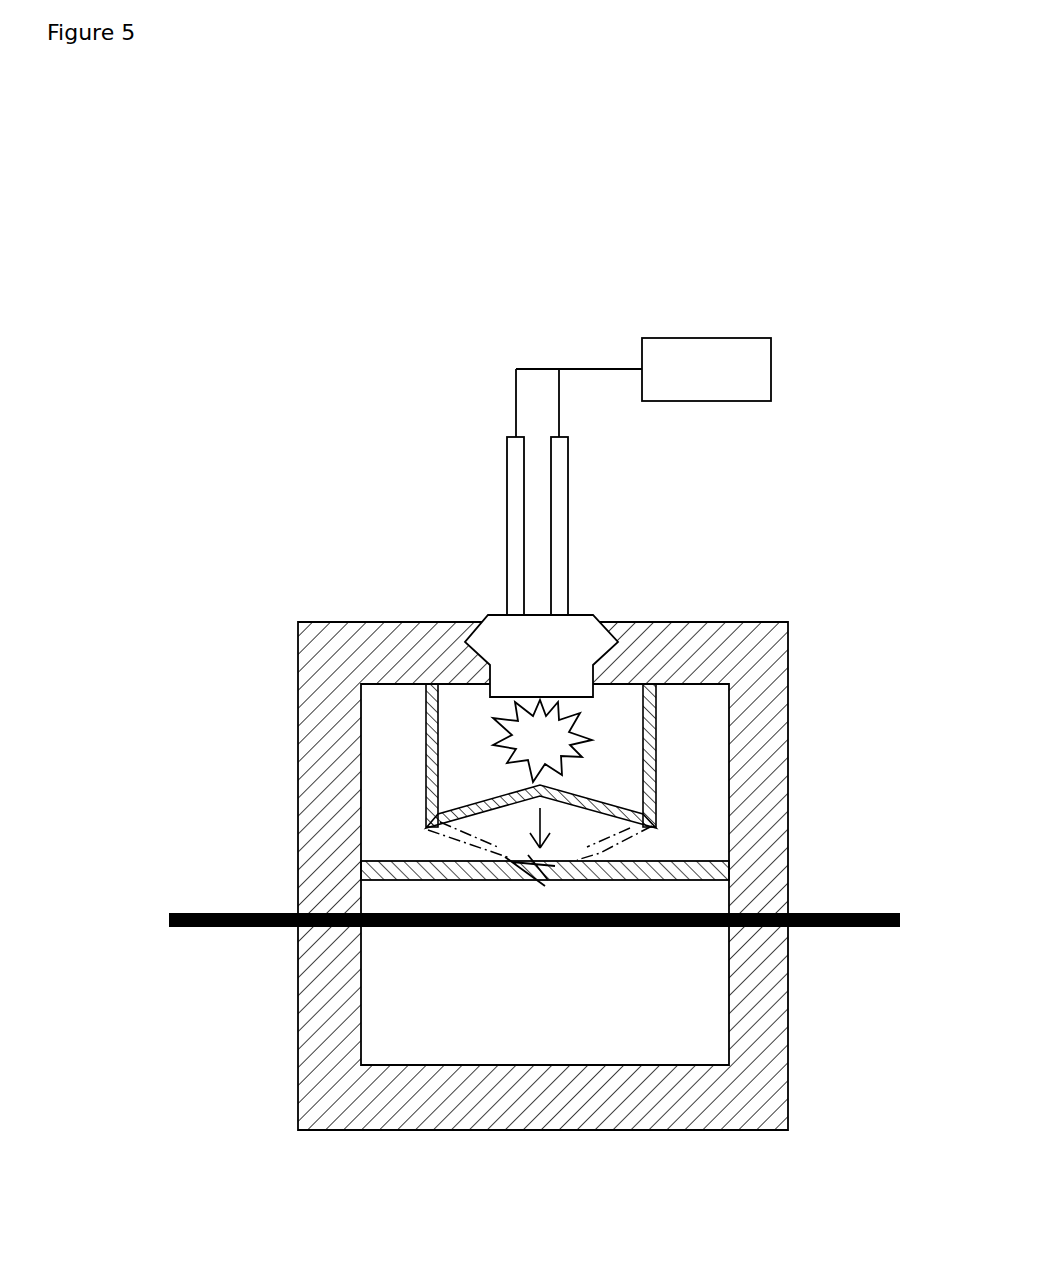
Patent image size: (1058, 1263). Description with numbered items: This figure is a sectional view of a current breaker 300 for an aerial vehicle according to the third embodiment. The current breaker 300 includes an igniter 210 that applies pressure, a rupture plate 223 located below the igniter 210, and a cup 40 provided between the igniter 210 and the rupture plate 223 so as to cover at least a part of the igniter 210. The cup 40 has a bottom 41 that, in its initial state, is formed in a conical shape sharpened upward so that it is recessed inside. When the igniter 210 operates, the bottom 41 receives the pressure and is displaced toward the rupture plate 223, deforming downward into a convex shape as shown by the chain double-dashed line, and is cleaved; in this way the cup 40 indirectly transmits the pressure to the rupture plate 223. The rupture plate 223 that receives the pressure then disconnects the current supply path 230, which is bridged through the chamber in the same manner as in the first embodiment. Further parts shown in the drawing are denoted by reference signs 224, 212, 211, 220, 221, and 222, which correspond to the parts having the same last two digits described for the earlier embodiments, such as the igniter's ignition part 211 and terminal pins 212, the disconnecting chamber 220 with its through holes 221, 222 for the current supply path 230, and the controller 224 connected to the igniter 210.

The current breaker for an aerial vehicle 300 is at (568, 189).
The controller 224 is at (688, 338).
The electrode 212 is at (518, 474).
The igniter 210 is at (535, 533).
The nozzle 211 is at (498, 627).
The chamber housing 220 is at (326, 645).
The upper housing portion 221 is at (315, 905).
The lower housing portion 222 is at (760, 905).
The rupture plate 223 is at (398, 860).
The current supply path 230 is at (200, 928).
The cup 40 is at (648, 756).
The bottom 41 is at (615, 808).